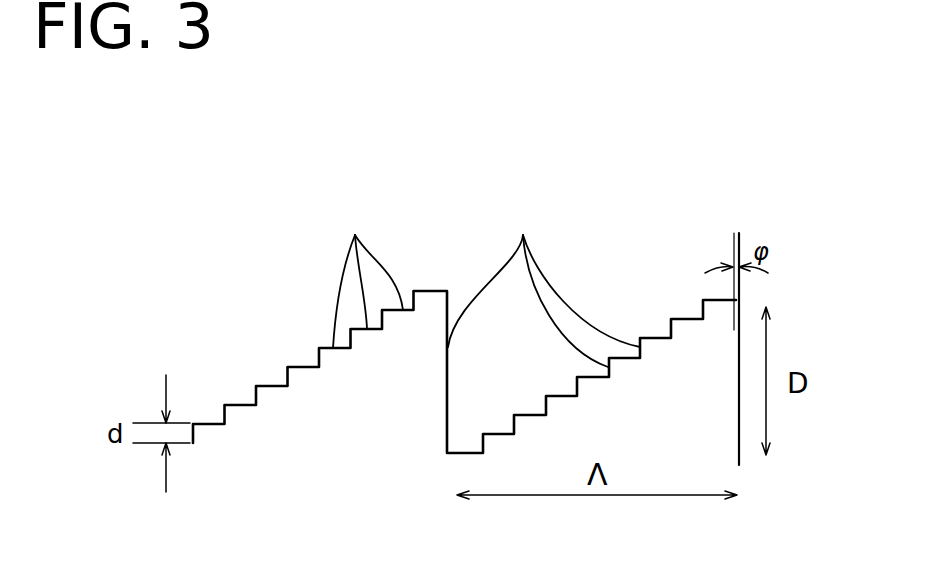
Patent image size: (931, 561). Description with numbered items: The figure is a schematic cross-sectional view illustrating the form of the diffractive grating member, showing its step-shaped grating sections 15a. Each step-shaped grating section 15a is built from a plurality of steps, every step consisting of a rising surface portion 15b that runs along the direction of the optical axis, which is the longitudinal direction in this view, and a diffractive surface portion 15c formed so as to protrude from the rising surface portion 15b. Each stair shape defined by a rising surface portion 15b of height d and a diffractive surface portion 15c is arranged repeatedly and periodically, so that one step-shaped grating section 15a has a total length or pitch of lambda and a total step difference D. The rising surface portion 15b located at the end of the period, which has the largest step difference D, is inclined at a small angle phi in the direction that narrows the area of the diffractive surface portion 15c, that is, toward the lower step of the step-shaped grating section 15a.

The step-shaped grating section 15a is at (247, 360).
The rising surface portion 15b is at (802, 288).
The diffractive surface portion 15c is at (367, 274).